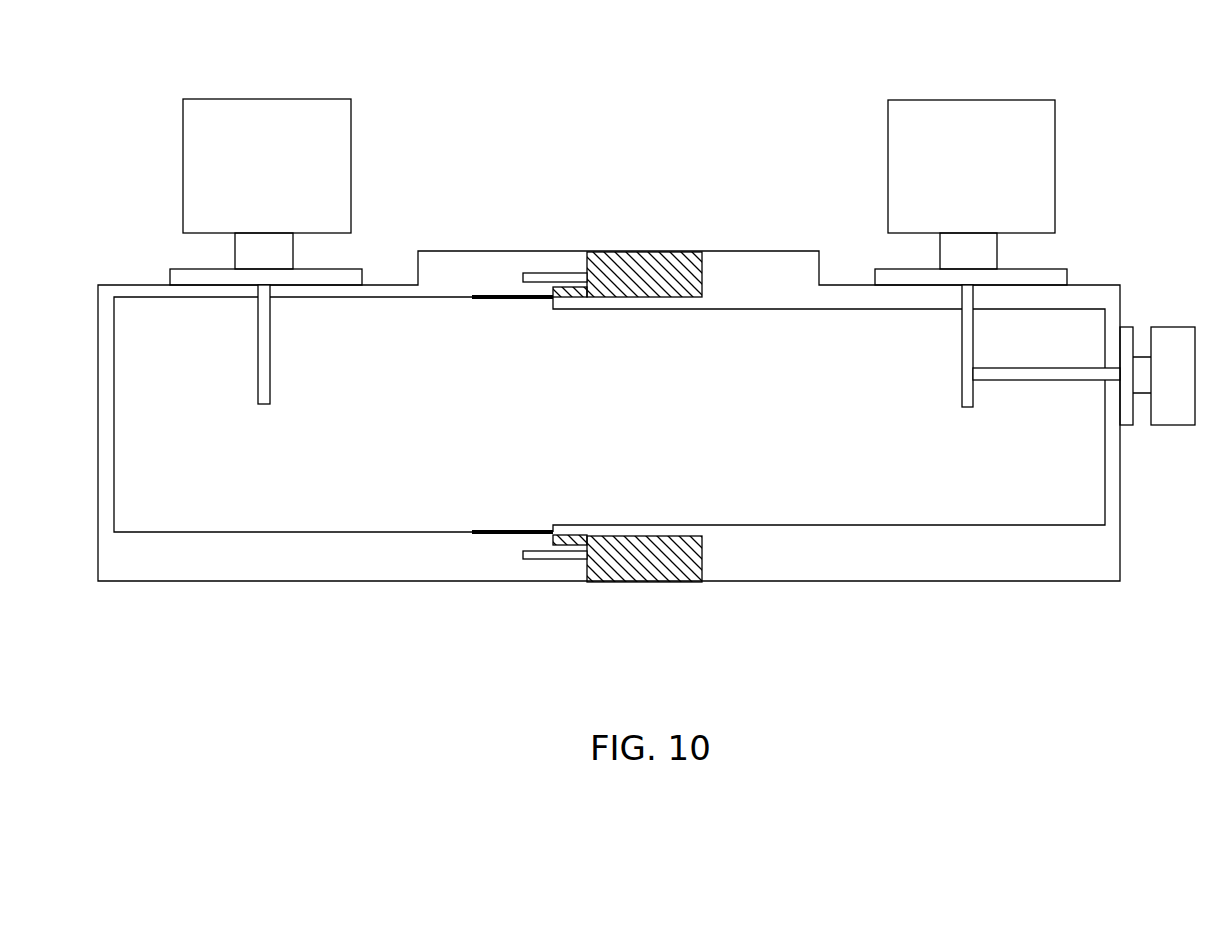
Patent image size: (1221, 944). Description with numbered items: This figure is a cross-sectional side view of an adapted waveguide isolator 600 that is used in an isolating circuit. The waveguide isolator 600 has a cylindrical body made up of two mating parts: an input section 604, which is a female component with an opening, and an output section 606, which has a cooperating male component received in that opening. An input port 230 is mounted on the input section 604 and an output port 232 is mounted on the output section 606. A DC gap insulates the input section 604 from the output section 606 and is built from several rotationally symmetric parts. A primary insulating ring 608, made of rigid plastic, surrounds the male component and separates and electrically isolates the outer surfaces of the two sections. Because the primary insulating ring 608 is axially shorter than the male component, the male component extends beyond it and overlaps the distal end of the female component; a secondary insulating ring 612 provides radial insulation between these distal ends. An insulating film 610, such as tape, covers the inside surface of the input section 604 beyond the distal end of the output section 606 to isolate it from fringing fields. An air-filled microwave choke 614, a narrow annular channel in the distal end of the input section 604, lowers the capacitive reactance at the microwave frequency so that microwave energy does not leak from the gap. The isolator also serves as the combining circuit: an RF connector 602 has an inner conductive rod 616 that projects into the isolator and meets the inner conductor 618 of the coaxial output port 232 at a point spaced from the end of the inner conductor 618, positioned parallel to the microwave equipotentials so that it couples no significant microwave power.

The waveguide isolator 600 is at (166, 647).
The RF connector 602 is at (1175, 327).
The input section 604 is at (282, 565).
The output section 606 is at (940, 568).
The primary insulating ring 608 is at (645, 268).
The insulating film 610 is at (480, 295).
The secondary insulating ring 612 is at (568, 298).
The microwave choke 614 is at (550, 272).
The inner conductive rod 616 is at (1027, 384).
The inner conductor 618 is at (960, 364).
The input port 230 is at (258, 98).
The output port 232 is at (958, 98).